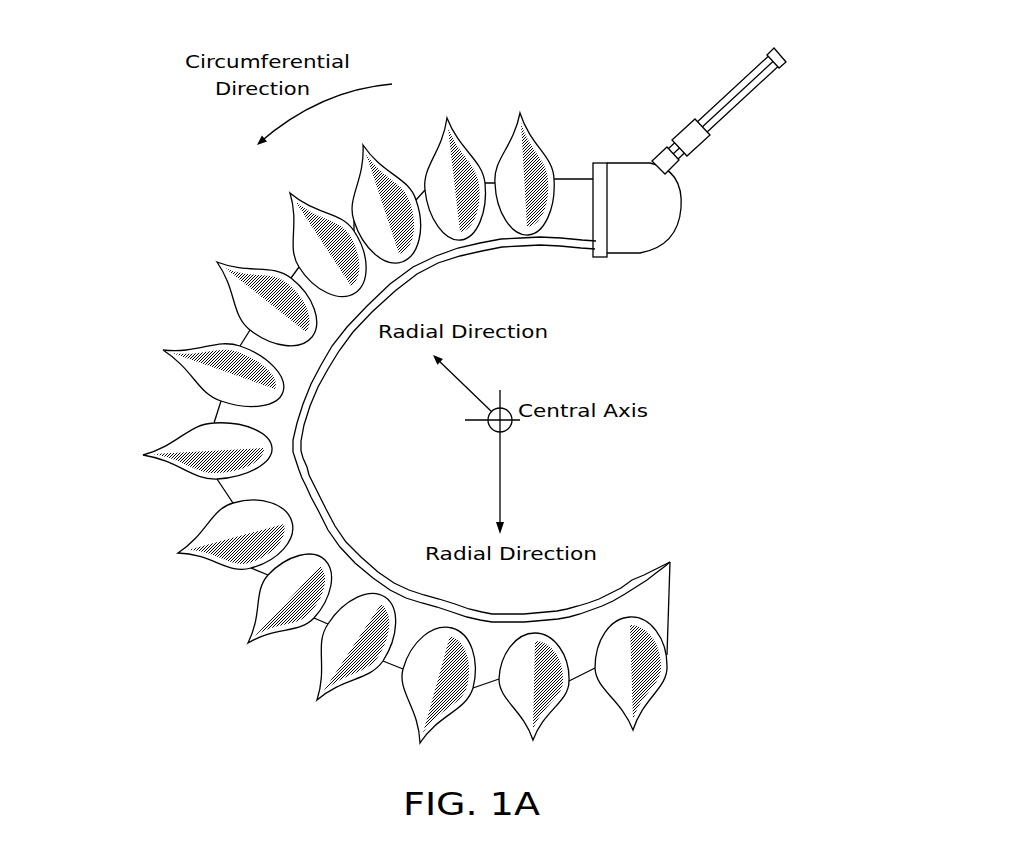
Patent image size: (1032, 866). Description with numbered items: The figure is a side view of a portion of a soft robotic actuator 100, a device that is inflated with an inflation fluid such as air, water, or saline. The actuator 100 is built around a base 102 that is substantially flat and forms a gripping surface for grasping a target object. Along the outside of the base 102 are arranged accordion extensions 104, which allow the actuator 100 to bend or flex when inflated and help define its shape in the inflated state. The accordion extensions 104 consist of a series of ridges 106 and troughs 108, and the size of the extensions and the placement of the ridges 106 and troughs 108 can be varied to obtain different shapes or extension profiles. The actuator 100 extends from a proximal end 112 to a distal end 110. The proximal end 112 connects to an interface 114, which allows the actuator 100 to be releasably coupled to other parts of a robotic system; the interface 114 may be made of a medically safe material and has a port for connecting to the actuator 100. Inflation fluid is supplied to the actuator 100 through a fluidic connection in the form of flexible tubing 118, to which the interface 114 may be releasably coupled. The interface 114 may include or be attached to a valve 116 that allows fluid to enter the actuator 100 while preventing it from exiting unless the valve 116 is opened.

The soft robotic actuator 100 is at (465, 385).
The base 102 is at (494, 245).
The accordion extensions 104 is at (454, 428).
The ridges 106 is at (170, 354).
The troughs 108 is at (200, 418).
The distal end 110 is at (694, 546).
The proximal end 112 is at (686, 250).
The interface 114 is at (611, 164).
The valve 116 is at (674, 170).
The flexible tubing 118 is at (747, 78).